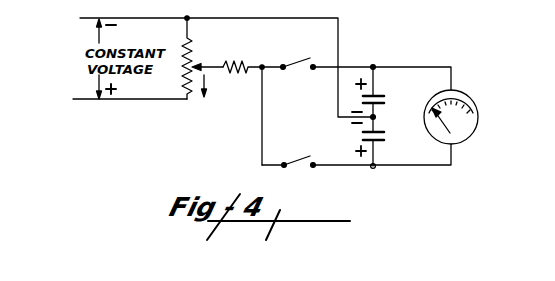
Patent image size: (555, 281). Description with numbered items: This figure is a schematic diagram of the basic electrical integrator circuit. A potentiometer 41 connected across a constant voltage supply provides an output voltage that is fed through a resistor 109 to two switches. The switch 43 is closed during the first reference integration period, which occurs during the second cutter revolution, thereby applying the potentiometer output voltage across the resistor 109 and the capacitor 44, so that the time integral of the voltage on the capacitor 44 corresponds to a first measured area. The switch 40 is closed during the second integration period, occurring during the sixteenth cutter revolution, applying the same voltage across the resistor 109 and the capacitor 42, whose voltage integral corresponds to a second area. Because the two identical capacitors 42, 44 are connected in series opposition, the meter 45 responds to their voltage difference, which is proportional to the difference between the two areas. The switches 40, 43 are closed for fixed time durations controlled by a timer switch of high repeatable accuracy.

The potentiometer 41 is at (198, 45).
The resistor 109 is at (240, 57).
The switch 40 is at (305, 57).
The capacitor 42 is at (386, 98).
The capacitor 44 is at (387, 135).
The switch 43 is at (303, 156).
The meter 45 is at (476, 97).